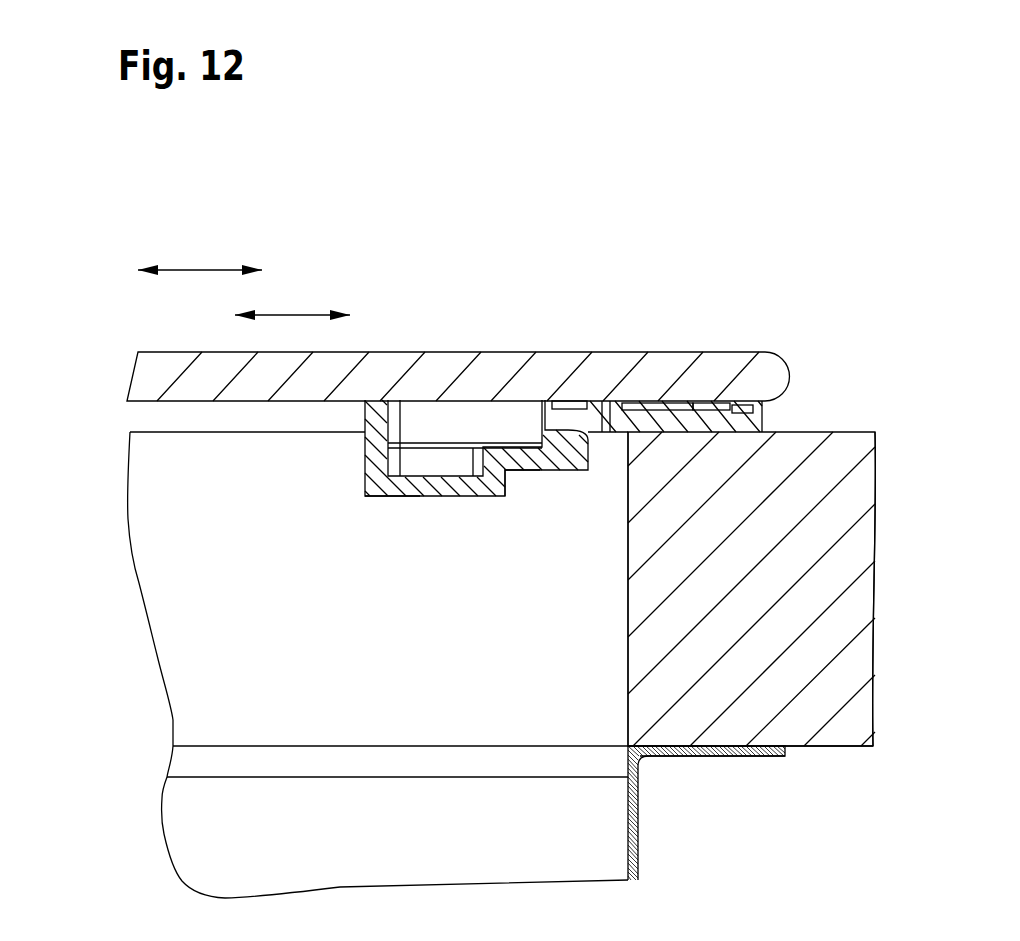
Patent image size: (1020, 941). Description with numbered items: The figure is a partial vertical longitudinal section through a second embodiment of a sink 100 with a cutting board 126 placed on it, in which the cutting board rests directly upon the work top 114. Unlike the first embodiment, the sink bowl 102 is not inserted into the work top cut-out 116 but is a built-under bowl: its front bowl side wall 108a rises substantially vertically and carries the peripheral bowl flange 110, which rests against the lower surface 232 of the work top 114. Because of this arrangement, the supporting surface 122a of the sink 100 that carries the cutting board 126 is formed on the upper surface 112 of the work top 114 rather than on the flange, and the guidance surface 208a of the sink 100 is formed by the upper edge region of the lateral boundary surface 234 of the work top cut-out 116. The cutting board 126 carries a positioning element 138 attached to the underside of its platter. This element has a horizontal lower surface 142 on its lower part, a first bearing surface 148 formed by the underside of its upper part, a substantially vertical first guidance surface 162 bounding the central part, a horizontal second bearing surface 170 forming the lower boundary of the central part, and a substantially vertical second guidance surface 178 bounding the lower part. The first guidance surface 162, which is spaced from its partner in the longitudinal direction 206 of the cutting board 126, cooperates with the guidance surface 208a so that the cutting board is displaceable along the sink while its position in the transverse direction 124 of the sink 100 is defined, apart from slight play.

The sink 100 is at (92, 454).
The sink bowl 102 is at (627, 805).
The front bowl side wall 108a is at (619, 850).
The bowl flange 110 is at (735, 757).
The upper surface of the work top 112 is at (854, 422).
The work top 114 is at (808, 445).
The work top cut-out 116 is at (620, 657).
The supporting surface 122a is at (670, 413).
The transverse direction of the sink 124 is at (203, 268).
The cutting board 126 is at (465, 352).
The positioning element 138 is at (367, 493).
The lower surface 142 is at (405, 498).
The first bearing surface 148 is at (725, 410).
The first guidance surface 162 is at (587, 407).
The second bearing surface 170 is at (536, 472).
The second guidance surface 178 is at (510, 478).
The longitudinal direction of the cutting board 206 is at (297, 313).
The guidance surface of the sink 208a is at (600, 402).
The lower surface of the work top 232 is at (857, 755).
The lateral boundary surface of the work top cut-out 234 is at (620, 541).